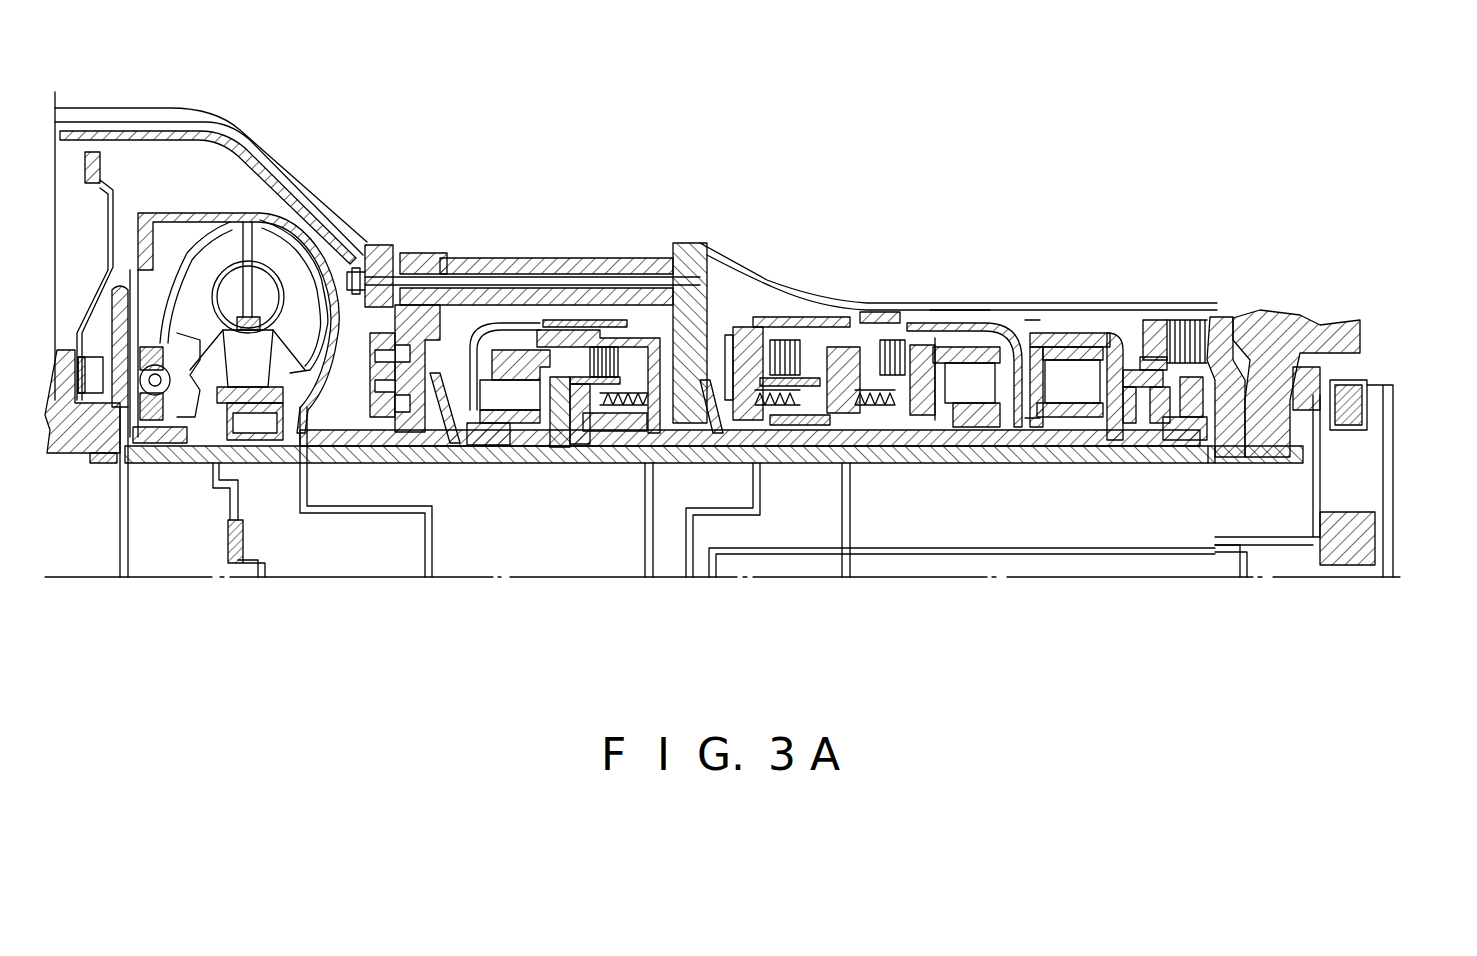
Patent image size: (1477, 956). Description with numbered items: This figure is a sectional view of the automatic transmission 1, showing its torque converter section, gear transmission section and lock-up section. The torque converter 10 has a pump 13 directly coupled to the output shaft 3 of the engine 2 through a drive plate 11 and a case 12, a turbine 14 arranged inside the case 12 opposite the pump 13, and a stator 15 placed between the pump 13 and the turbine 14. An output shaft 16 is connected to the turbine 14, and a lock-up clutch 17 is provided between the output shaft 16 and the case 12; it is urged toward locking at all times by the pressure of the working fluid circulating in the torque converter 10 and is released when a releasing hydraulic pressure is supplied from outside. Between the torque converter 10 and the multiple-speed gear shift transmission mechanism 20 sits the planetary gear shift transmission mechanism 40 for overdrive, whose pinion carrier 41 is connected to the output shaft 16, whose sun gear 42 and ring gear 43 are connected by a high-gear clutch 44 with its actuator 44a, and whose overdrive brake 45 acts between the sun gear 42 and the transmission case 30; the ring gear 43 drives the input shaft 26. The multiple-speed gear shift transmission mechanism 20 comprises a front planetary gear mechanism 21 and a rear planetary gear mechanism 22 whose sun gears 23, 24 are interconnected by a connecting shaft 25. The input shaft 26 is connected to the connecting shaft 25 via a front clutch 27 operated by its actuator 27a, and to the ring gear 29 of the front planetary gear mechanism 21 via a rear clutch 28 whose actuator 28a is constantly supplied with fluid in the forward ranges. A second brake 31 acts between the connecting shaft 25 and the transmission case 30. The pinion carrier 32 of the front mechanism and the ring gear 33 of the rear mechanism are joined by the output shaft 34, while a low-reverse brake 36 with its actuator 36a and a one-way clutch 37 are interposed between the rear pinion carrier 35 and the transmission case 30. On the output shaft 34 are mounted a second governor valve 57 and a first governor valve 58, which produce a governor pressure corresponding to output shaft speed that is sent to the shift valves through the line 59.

The automatic transmission 1 is at (1133, 210).
The engine 2 is at (58, 93).
The output shaft of the engine 3 is at (77, 445).
The torque converter 10 is at (292, 226).
The drive plate 11 is at (112, 208).
The case 12 is at (197, 210).
The pump 13 is at (297, 268).
The turbine 14 is at (197, 273).
The stator 15 is at (260, 358).
The output shaft 16 is at (167, 468).
The lock-up clutch 17 is at (110, 262).
The multiple-speed gear shift transmission mechanism 20 is at (1030, 330).
The front planetary gear mechanism 21 is at (950, 340).
The rear planetary gear mechanism 22 is at (1090, 333).
The sun gear 23 is at (992, 440).
The sun gear 24 is at (1073, 443).
The connecting shaft 25 is at (1033, 450).
The input shaft 26 is at (797, 457).
The front clutch 27 is at (797, 340).
The actuator of the front clutch 27a is at (733, 333).
The rear clutch 28 is at (913, 313).
The actuator of the rear clutch 28a is at (880, 457).
The ring gear 29 is at (993, 313).
The transmission case 30 is at (840, 300).
The second brake 31 is at (873, 307).
The pinion carrier 32 is at (940, 457).
The ring gear 33 is at (1113, 333).
The output shaft 34 is at (1140, 457).
The pinion carrier 35 is at (1053, 320).
The low-reverse brake 36 is at (1170, 340).
The actuator of the low-reverse brake 36a is at (1223, 317).
The one-way clutch 37 is at (1160, 450).
The planetary gear shift transmission mechanism for overdrive 40 is at (470, 330).
The pinion carrier 41 is at (547, 457).
The sun gear 42 is at (490, 457).
The ring gear 43 is at (517, 350).
The high-gear clutch 44 is at (607, 317).
The actuator of the high-gear clutch 44a is at (643, 323).
The overdrive brake 45 is at (580, 320).
The second governor valve 57 is at (1360, 380).
The first governor valve 58 is at (1343, 517).
The line 59 is at (1250, 543).